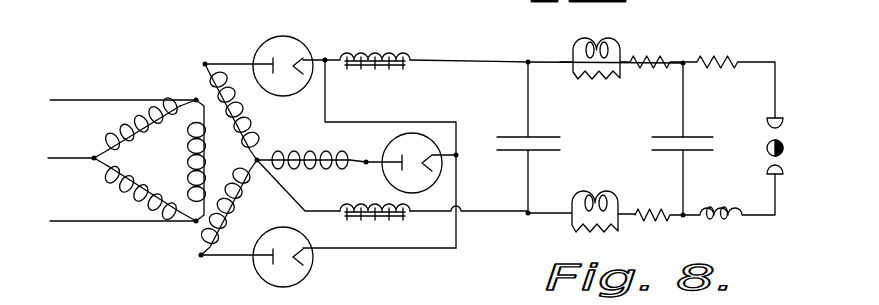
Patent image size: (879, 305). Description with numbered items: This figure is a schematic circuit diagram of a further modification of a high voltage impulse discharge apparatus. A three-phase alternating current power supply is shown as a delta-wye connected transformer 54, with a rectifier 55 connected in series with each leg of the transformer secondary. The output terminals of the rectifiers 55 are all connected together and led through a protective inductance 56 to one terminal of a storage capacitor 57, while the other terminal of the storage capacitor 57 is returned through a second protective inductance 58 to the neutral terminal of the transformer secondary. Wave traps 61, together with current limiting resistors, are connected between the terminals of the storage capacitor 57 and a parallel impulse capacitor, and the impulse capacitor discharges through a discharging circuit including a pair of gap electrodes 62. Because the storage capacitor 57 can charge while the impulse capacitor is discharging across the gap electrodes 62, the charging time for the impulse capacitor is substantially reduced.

The delta-wye connected transformer 54 is at (202, 95).
The rectifier 55 is at (293, 45).
The protective inductance 56 is at (383, 52).
The storage capacitor 57 is at (542, 140).
The protective inductance 58 is at (393, 218).
The wave trap 61 is at (617, 56).
The gap electrodes 62 is at (783, 122).